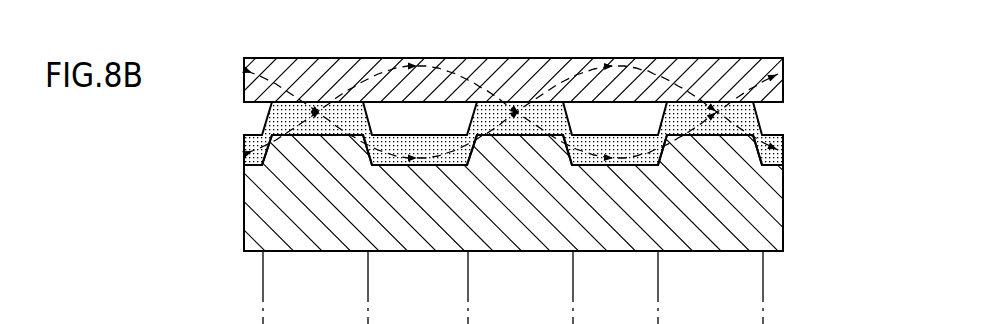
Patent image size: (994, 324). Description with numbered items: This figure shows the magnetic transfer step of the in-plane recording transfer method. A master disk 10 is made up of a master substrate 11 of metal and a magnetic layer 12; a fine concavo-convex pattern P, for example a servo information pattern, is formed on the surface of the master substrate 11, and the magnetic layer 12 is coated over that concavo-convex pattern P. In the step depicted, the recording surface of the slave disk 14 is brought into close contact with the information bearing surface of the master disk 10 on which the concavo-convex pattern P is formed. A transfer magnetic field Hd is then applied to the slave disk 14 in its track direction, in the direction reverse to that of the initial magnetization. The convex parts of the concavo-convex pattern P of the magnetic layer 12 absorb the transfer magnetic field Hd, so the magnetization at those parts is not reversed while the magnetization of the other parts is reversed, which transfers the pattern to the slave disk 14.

The master disk 10 is at (523, 233).
The master substrate 11 is at (788, 200).
The magnetic layer 12 is at (525, 107).
The slave disk 14 is at (752, 73).
The concavo-convex pattern P is at (314, 103).
The transfer magnetic field Hd is at (218, 111).